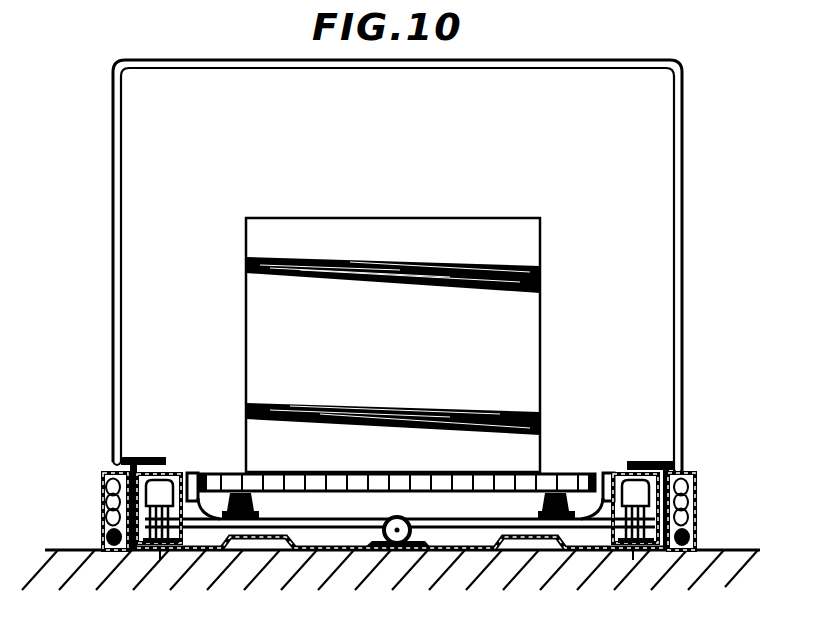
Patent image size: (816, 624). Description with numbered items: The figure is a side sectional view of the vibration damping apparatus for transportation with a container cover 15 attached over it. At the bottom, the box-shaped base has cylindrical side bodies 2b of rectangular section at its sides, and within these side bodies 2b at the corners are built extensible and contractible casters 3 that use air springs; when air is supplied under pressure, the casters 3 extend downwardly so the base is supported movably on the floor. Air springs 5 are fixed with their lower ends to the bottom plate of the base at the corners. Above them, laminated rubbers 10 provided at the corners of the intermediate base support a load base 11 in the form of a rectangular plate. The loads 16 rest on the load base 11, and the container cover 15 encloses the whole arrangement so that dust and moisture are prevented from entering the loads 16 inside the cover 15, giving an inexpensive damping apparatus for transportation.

The container cover 15 is at (683, 203).
The loads 16 is at (541, 296).
The load base 11 is at (562, 472).
The laminated rubbers 10 is at (197, 472).
The cylindrical side bodies 2b is at (103, 484).
The casters 3 is at (103, 524).
The air springs 5 is at (163, 551).